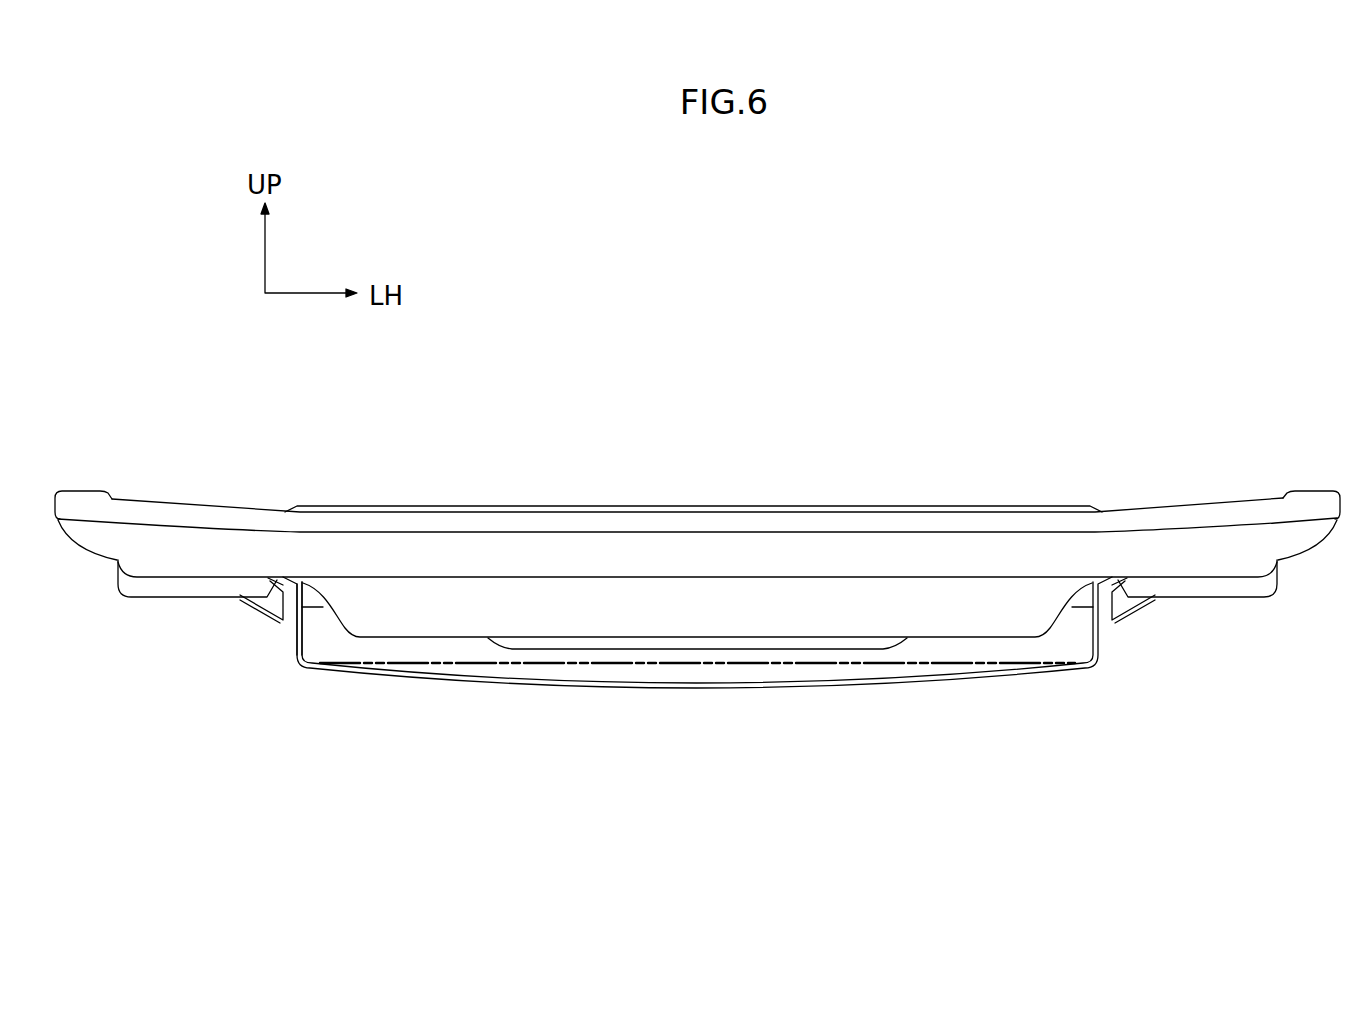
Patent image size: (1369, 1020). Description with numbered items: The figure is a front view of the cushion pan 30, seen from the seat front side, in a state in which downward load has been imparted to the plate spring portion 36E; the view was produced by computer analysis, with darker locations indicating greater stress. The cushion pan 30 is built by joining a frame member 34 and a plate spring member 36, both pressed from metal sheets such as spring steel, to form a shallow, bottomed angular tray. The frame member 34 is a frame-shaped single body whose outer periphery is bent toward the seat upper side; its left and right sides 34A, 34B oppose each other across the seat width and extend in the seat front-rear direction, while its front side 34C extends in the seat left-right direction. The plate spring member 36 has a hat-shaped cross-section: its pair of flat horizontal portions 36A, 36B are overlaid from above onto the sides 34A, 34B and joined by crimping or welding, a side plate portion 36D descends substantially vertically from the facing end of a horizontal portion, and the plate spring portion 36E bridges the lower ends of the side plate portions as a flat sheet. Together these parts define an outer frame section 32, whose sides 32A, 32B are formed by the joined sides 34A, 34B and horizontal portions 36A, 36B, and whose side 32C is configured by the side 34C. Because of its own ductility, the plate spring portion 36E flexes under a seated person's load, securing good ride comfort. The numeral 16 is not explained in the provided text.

The cushion pan 30 is at (699, 379).
The rocker 16 is at (705, 593).
The outer frame section 32 is at (1277, 473).
The frame member 34 is at (160, 503).
The side of frame member 34A is at (1236, 621).
The side of frame member 34B is at (197, 621).
The front side of frame member 34C is at (693, 492).
The side of outer frame section 32A is at (1205, 599).
The side of outer frame section 32B is at (174, 601).
The side of outer frame section 32C is at (693, 509).
The plate spring member 36 is at (862, 691).
The horizontal portion 36A is at (1108, 575).
The horizontal portion 36B is at (285, 575).
The side plate portion 36D is at (293, 636).
The plate spring portion 36E is at (718, 664).